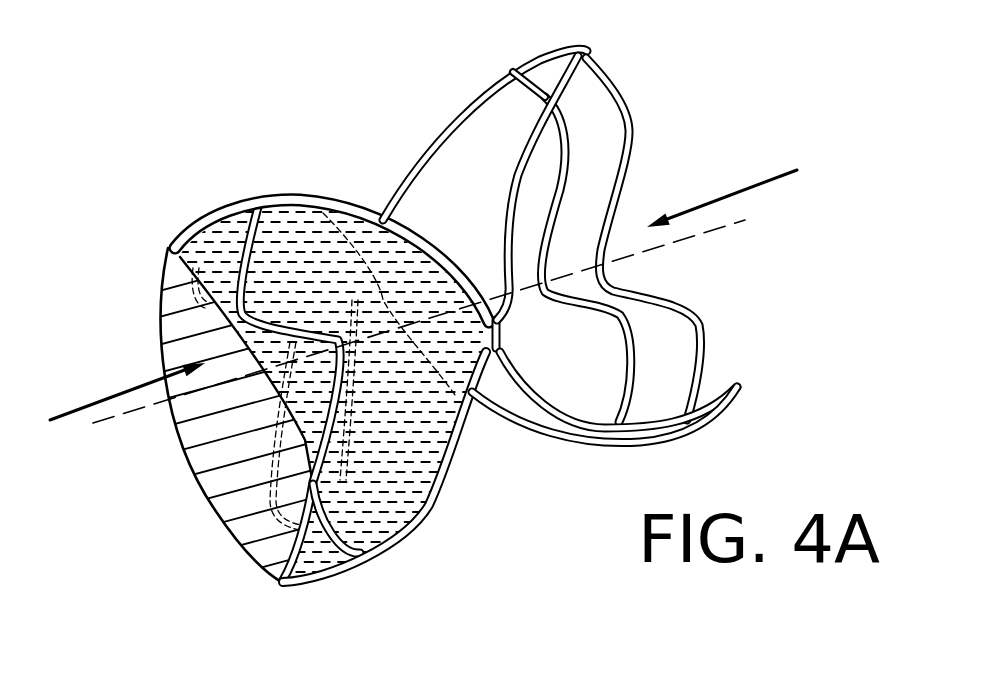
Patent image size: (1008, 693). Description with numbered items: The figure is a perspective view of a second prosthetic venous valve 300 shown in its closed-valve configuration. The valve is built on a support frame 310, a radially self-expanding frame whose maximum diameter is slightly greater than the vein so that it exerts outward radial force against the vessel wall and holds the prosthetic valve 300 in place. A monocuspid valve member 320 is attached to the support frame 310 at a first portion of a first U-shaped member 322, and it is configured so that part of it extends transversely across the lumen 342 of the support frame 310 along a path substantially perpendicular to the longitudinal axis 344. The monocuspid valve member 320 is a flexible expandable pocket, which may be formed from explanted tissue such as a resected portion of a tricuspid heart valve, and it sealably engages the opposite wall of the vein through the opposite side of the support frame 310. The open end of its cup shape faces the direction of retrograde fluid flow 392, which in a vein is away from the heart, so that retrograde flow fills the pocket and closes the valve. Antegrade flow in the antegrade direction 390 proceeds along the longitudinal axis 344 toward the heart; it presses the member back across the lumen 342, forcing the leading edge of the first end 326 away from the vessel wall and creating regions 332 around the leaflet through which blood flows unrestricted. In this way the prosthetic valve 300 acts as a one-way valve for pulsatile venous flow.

The prosthetic venous valve 300 is at (305, 153).
The support frame 310 is at (453, 97).
The monocuspid valve member 320 is at (390, 490).
The first U-shaped member 322 is at (460, 446).
The first end 326 is at (218, 486).
The regions around the leaflet 332 is at (330, 550).
The lumen 342 is at (575, 198).
The longitudinal axis 344 is at (653, 247).
The antegrade direction 390 is at (717, 197).
The retrograde fluid flow 392 is at (157, 377).